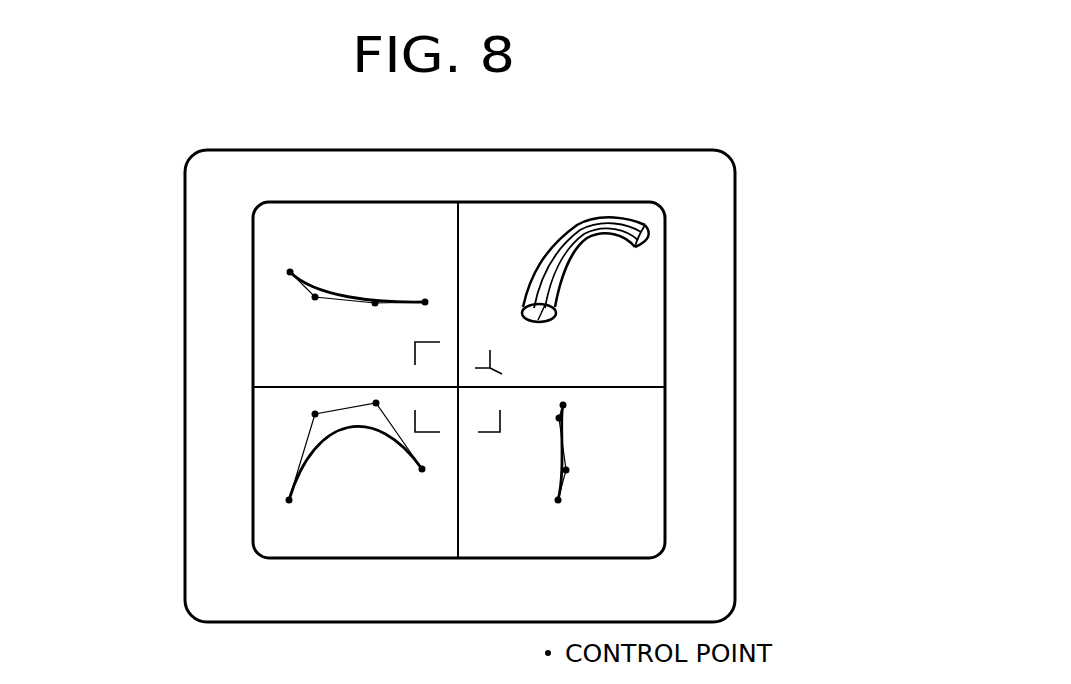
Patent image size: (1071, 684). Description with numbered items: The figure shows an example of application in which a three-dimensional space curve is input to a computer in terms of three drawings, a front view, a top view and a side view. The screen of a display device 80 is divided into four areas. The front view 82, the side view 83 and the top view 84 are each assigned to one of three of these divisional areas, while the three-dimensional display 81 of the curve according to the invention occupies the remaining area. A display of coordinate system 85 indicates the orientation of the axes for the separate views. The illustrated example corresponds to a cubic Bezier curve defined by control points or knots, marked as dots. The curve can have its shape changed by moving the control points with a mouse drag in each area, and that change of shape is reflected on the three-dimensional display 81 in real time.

The display device 80 is at (662, 590).
The three-dimensional display 81 is at (632, 313).
The front view 82 is at (268, 507).
The side view 83 is at (622, 462).
The top view 84 is at (292, 303).
The display of coordinate system 85 is at (487, 338).